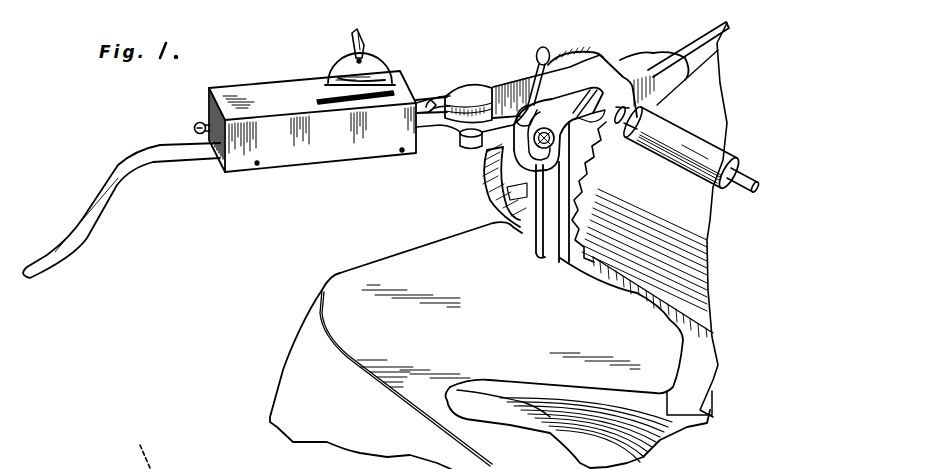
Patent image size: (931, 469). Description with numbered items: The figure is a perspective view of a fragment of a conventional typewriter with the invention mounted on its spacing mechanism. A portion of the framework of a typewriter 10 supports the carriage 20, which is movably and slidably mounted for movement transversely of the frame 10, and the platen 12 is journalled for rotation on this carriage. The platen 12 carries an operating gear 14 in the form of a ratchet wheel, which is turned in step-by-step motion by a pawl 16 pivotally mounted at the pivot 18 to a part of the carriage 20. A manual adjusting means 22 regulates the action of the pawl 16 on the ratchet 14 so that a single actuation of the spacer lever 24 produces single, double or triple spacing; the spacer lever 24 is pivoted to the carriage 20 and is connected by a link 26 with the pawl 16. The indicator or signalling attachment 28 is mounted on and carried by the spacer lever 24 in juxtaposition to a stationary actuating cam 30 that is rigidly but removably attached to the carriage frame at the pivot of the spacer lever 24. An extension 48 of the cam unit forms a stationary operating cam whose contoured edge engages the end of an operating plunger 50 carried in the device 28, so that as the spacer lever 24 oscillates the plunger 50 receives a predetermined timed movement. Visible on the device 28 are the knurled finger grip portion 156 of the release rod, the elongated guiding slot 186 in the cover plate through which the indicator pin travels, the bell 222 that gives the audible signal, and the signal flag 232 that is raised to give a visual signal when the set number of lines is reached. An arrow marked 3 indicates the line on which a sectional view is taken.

The section line 3- 3 is at (149, 456).
The framework of a typewriter 10 is at (392, 275).
The platen 12 is at (693, 245).
The operating gear 14 is at (597, 158).
The pawl 16 is at (563, 115).
The pivot 18 is at (553, 143).
The carriage 20 is at (528, 232).
The manual adjusting means 22 is at (530, 70).
The spacer lever 24 is at (145, 158).
The link 26 is at (477, 151).
The indicator or signalling attachment 28 is at (277, 82).
The stationary actuating cam 30 is at (465, 83).
The extension 48 is at (433, 98).
The operating plunger 50 is at (417, 99).
The knurled finger grip portion 156 is at (197, 124).
The elongated guiding slot 186 is at (318, 100).
The bell 222 is at (348, 70).
The signal flag 232 is at (359, 34).